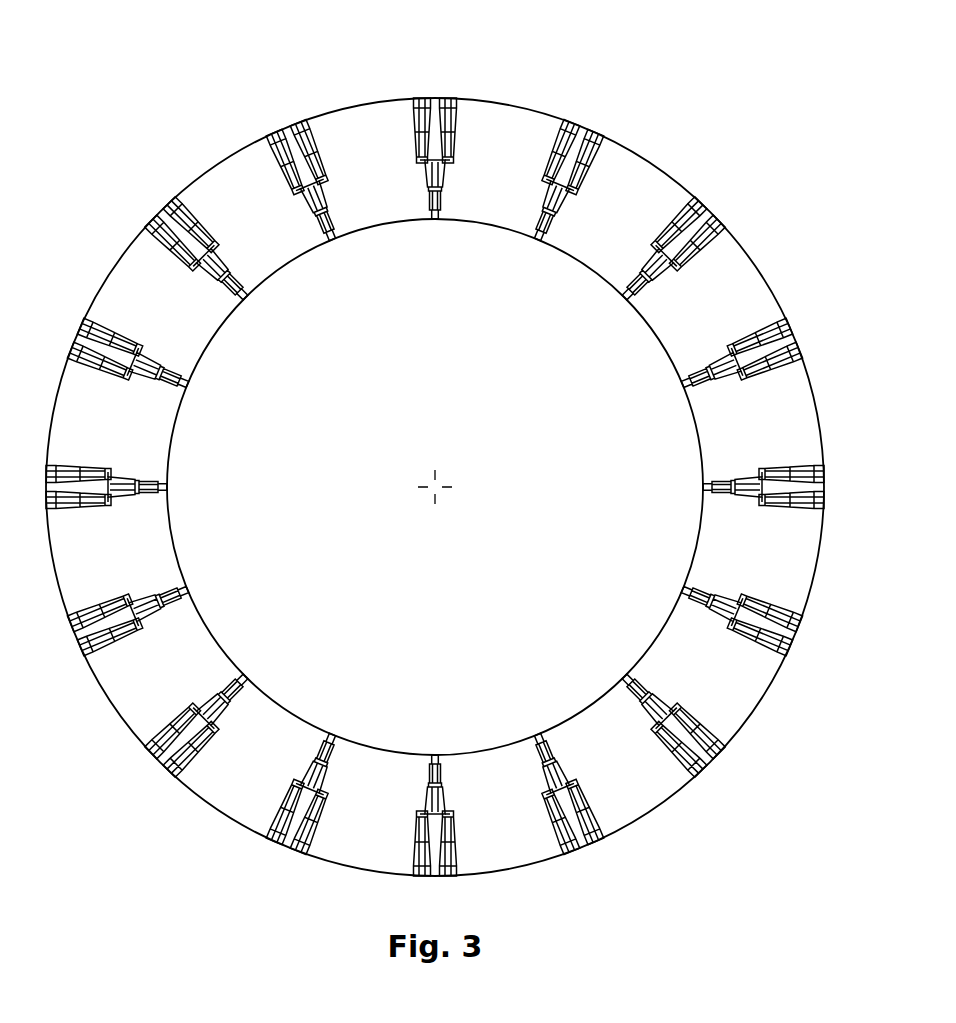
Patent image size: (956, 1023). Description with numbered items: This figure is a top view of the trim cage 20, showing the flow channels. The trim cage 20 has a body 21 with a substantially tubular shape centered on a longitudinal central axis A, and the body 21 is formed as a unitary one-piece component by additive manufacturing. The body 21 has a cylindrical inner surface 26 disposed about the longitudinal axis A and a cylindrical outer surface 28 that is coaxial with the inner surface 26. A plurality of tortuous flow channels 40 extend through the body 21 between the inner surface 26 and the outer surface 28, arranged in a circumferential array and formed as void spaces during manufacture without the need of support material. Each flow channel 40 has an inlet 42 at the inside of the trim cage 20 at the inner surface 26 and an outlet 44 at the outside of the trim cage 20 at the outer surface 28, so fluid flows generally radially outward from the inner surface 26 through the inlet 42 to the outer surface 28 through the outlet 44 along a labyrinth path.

The trim cage 20 is at (569, 90).
The body 21 is at (634, 143).
The inner surface 26 is at (697, 427).
The outer surface 28 is at (640, 822).
The flow channels 40 is at (462, 126).
The inlet 42 is at (332, 240).
The outlet 44 is at (417, 97).
The longitudinal central axis A is at (435, 487).